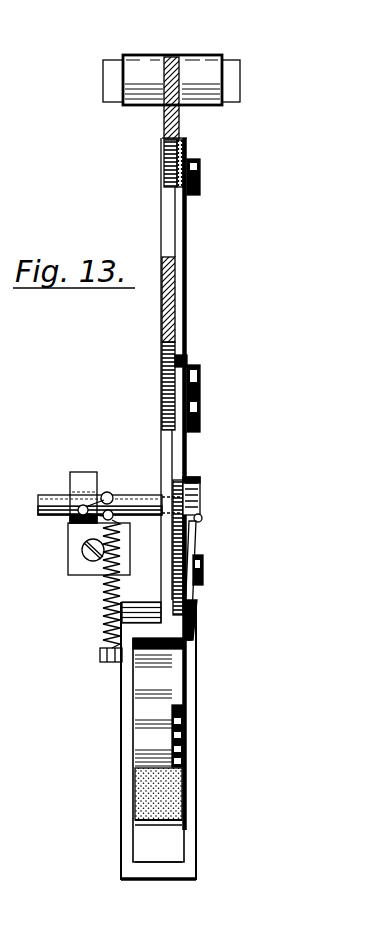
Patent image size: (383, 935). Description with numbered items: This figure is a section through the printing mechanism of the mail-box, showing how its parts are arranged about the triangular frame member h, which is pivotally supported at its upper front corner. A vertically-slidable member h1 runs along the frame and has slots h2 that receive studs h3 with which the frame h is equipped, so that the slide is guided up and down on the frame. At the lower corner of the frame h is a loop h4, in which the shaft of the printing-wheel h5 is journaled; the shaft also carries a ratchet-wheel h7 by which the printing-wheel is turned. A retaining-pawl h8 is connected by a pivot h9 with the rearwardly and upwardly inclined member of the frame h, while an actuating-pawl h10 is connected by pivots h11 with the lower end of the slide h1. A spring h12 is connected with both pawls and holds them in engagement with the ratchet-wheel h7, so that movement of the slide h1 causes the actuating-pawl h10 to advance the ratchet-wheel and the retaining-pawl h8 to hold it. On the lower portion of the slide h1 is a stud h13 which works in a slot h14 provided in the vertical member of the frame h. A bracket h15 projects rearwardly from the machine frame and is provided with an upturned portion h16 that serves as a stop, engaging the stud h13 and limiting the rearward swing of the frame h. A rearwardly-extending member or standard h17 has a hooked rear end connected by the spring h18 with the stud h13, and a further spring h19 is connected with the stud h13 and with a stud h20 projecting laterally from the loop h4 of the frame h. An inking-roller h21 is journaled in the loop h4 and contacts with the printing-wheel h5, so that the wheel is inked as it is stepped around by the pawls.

The triangular frame member h is at (141, 388).
The vertically-slidable member h1 is at (186, 248).
The slots h2 is at (190, 210).
The studs h3 is at (201, 166).
The loop h4 is at (136, 790).
The printing-wheel h5 is at (146, 700).
The ratchet-wheel h7 is at (181, 727).
The retaining-pawl h8 is at (186, 472).
The pivot h9 is at (200, 372).
The actuating-pawl h10 is at (193, 546).
The pivots h11 is at (204, 576).
The spring h12 is at (201, 504).
The stud h13 is at (134, 500).
The slot h14 is at (165, 466).
The bracket h15 is at (70, 548).
The upturned portion h16 is at (72, 482).
The rearwardly-extending member or standard h17 is at (84, 504).
The spring h18 is at (103, 496).
The spring h19 is at (105, 605).
The stud h20 is at (100, 655).
The inking-roller h21 is at (136, 806).